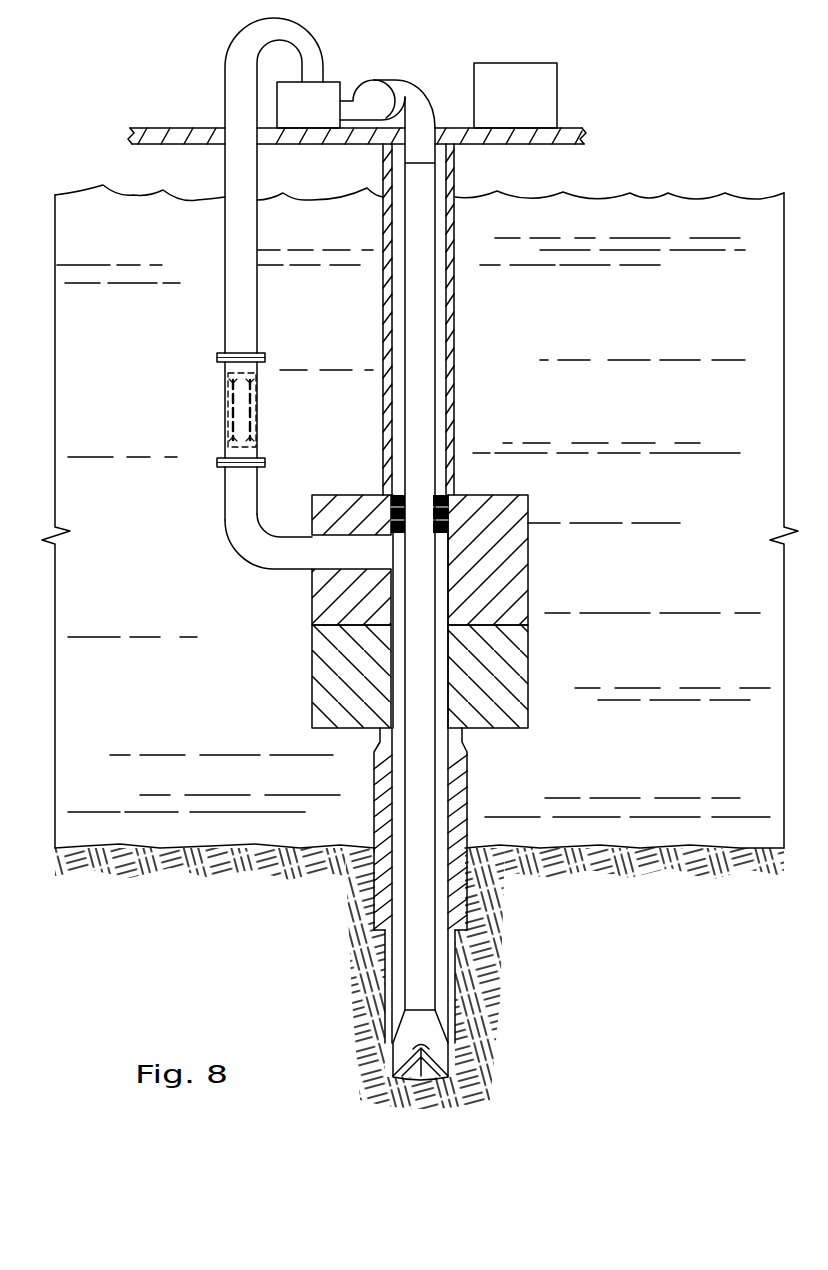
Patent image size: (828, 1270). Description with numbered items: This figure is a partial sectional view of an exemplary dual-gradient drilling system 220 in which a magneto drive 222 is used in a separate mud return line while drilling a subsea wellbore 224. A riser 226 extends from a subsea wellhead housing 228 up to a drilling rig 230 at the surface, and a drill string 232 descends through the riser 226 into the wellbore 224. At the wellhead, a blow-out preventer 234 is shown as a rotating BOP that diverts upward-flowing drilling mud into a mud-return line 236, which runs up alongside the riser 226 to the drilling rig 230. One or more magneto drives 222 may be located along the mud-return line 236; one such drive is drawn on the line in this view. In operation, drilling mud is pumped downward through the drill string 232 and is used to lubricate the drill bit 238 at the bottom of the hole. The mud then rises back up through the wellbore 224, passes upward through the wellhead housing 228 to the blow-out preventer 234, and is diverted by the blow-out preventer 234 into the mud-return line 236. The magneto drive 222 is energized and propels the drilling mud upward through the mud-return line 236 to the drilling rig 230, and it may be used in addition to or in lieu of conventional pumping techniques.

The dual-gradient drilling system 220 is at (142, 58).
The magneto drive 222 is at (225, 407).
The subsea wellbore 224 is at (443, 897).
The riser 226 is at (455, 315).
The subsea wellhead housing 228 is at (463, 772).
The drilling rig 230 is at (603, 68).
The drill string 232 is at (415, 950).
The blow-out preventer 234 is at (520, 553).
The mud-return line 236 is at (248, 298).
The drill bit 238 is at (435, 1042).